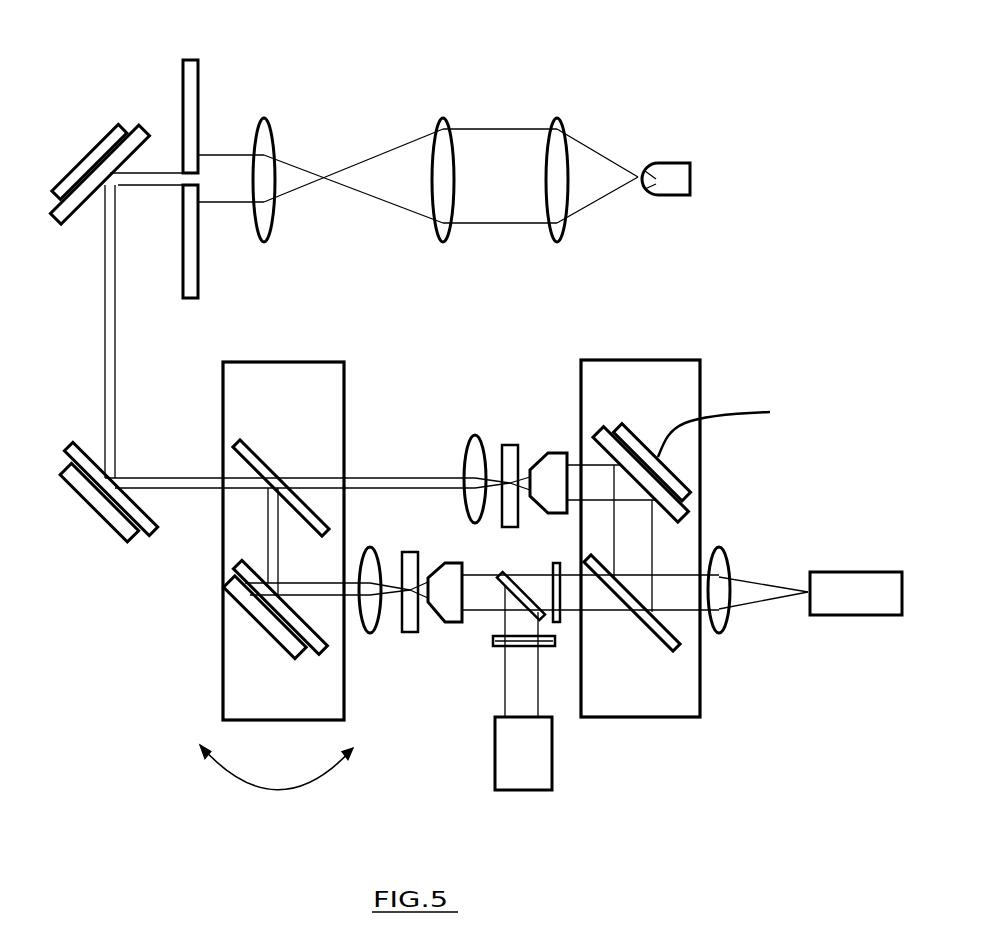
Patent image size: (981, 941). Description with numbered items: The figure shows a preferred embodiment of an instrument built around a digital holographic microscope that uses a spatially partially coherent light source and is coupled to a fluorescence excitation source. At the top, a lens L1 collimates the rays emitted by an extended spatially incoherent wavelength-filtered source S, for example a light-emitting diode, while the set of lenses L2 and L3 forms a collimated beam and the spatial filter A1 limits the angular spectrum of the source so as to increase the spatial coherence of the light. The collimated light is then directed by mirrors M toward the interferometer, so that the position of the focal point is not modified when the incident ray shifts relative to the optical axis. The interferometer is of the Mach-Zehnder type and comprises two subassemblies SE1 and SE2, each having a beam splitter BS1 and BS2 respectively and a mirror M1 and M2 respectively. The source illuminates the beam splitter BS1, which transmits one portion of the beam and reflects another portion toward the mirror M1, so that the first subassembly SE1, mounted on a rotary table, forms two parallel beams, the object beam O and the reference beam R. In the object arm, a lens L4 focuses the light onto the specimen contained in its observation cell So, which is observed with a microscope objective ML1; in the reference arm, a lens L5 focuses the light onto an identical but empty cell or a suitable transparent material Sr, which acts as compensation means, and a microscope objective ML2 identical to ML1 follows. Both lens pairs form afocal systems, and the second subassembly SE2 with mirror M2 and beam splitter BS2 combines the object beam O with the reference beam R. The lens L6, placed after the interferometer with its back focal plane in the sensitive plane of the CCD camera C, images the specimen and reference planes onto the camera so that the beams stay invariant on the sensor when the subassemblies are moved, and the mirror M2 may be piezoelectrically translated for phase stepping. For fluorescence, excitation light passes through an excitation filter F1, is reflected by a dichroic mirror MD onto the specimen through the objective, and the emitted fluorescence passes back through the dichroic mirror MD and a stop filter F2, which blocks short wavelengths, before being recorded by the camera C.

The spatial filter A1 is at (194, 155).
The mirror M is at (99, 332).
The lens L1 is at (557, 165).
The lens L2 is at (443, 165).
The lens L3 is at (264, 162).
The lens L4 is at (372, 606).
The lens L5 is at (458, 473).
The lens L6 is at (726, 606).
The source S is at (462, 803).
The first subassembly SE1 is at (283, 516).
The second subassembly SE2 is at (640, 512).
The beam splitter BS1 is at (281, 484).
The beam splitter BS2 is at (632, 603).
The reference beam R is at (290, 458).
The object beam O is at (366, 517).
The observation cell Sr is at (505, 471).
The observation cell So is at (406, 574).
The microscope objective ML1 is at (454, 579).
The microscope objective ML2 is at (548, 465).
The mirror M1 is at (273, 627).
The mirror M2 is at (681, 457).
The CCD camera C is at (856, 593).
The excitation filter F1 is at (490, 653).
The stop filter F2 is at (570, 635).
The dichroic mirror MD is at (522, 605).